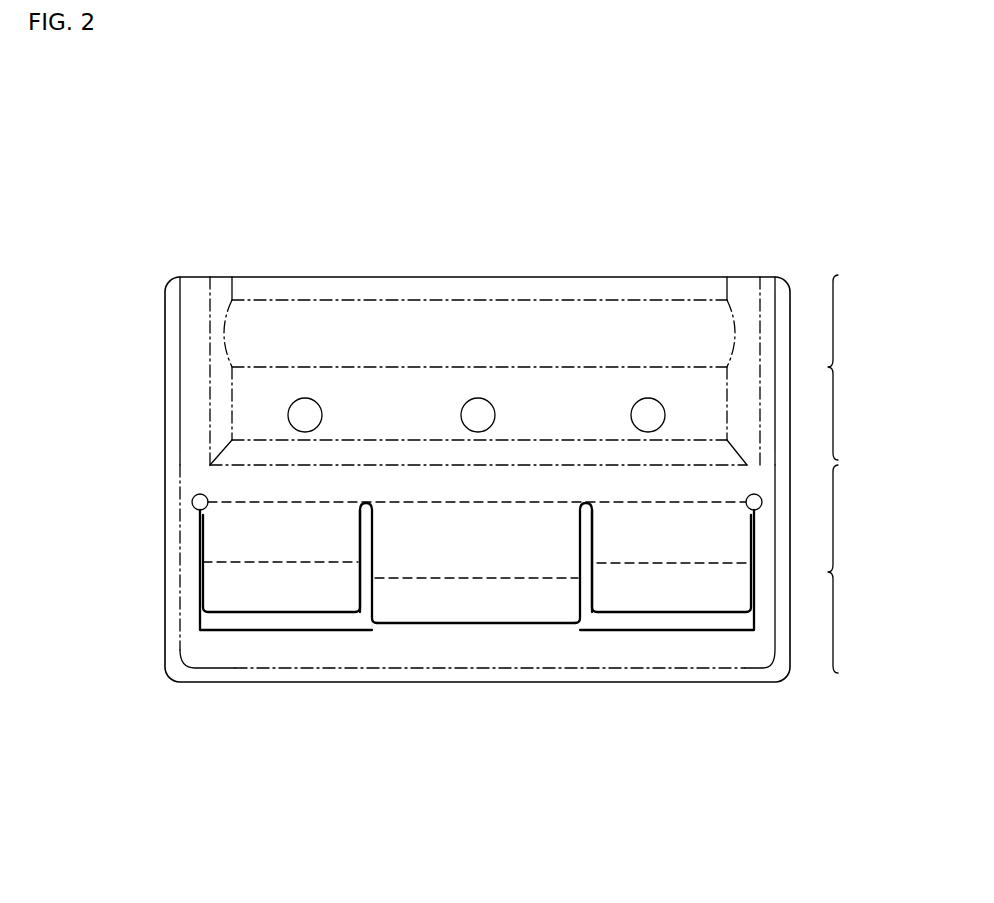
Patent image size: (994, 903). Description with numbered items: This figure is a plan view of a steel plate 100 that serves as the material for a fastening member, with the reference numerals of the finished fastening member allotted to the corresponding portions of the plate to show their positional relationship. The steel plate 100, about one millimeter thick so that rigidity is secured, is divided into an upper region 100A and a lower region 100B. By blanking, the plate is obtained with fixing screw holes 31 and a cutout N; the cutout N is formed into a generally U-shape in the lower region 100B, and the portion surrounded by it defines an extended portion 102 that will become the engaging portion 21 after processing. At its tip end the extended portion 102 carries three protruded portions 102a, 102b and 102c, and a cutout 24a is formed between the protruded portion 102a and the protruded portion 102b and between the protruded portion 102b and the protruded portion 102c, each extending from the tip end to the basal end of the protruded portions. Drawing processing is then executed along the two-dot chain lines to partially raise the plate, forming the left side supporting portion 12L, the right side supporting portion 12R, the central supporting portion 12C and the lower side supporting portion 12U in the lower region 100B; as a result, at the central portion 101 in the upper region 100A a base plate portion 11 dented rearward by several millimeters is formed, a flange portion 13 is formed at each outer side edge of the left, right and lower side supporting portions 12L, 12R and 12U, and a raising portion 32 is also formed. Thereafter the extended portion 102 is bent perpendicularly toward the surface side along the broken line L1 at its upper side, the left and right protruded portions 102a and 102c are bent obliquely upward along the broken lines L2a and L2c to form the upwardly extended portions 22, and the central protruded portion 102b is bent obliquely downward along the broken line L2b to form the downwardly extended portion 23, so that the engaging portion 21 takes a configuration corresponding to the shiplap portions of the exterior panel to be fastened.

The steel plate 100 is at (735, 152).
The upper region 100A is at (868, 367).
The lower region 100B is at (868, 569).
The central portion 101 is at (477, 417).
The base plate portion 11 is at (582, 290).
The left side supporting portion 12L is at (195, 305).
The right side supporting portion 12R is at (760, 290).
The central supporting portion 12C is at (292, 487).
The lower side supporting portion 12U is at (288, 650).
The flange portion 13 is at (786, 308).
The raising portion 32 is at (425, 330).
The fixing screw holes 31 is at (321, 407).
The broken line L1 is at (512, 498).
The broken line L2a is at (248, 563).
The broken line L2b is at (515, 639).
The broken line L2c is at (625, 563).
The extended portion 102 is at (434, 639).
The engaging portion 21 is at (434, 627).
The protruded portion 102a is at (261, 643).
The protruded portion 102c is at (667, 642).
The upwardly extended portion 22 is at (452, 643).
The protruded portion 102b is at (500, 678).
The downwardly extended portion 23 is at (542, 605).
The cutout 24a is at (362, 513).
The cutout N is at (335, 622).